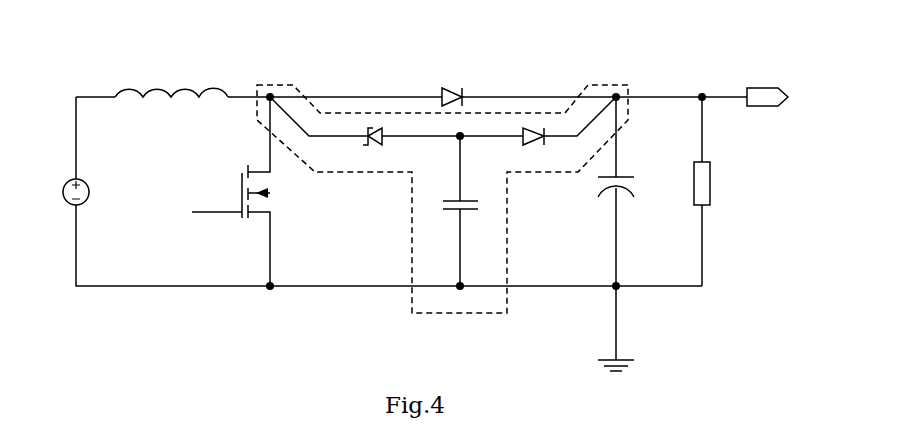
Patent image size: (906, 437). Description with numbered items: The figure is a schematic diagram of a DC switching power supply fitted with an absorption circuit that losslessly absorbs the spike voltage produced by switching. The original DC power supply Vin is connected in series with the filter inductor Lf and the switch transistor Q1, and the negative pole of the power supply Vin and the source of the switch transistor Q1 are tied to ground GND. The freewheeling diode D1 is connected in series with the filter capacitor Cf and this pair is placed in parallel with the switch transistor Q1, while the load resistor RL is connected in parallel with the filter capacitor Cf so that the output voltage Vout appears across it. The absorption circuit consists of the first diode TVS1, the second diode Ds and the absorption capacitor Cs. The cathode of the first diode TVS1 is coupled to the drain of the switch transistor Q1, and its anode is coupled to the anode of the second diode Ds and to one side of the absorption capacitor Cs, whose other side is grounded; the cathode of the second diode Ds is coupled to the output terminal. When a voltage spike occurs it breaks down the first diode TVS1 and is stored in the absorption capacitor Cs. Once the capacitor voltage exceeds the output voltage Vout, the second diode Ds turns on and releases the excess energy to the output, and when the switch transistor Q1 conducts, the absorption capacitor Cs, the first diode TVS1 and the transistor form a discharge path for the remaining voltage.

The filter inductor Lf is at (171, 72).
The original DC power supply Vin is at (59, 192).
The switch transistor Q1 is at (231, 191).
The freewheeling diode D1 is at (452, 86).
The first diode TVS1 is at (367, 149).
The second diode Ds is at (533, 149).
The absorption capacitor Cs is at (450, 211).
The filter capacitor Cf is at (628, 191).
The load resistor RL is at (715, 191).
The output voltage Vout is at (767, 85).
The ground GND is at (638, 328).